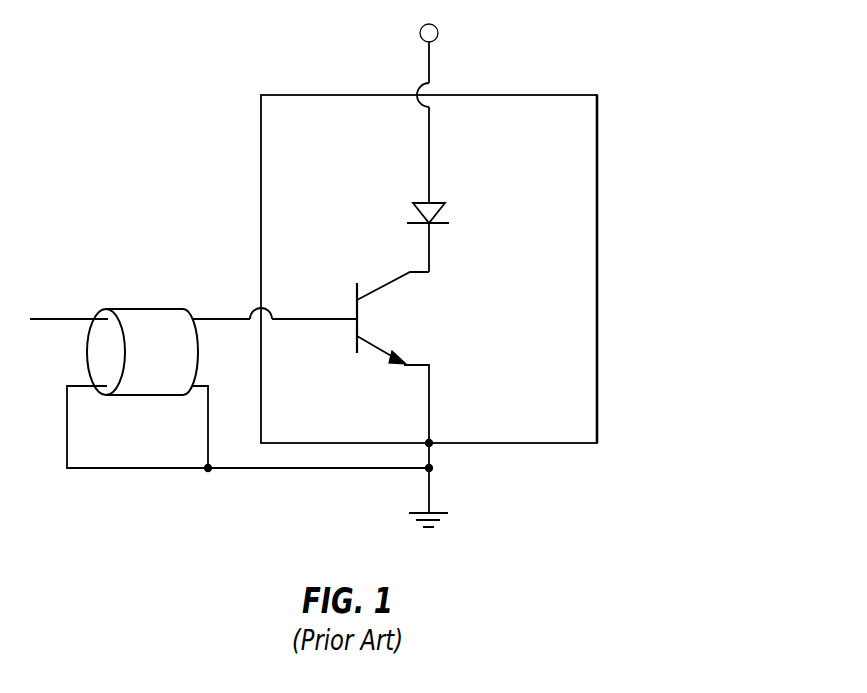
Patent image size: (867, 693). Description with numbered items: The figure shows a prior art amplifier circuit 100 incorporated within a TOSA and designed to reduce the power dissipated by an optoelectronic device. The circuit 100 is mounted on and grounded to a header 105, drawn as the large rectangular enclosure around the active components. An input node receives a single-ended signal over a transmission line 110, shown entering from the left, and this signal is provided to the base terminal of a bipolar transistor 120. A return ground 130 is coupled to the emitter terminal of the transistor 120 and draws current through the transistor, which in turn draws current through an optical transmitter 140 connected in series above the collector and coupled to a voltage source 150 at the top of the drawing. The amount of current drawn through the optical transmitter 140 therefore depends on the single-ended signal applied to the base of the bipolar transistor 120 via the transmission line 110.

The amplifier circuit 100 is at (667, 142).
The header 105 is at (598, 268).
The transmission line 110 is at (220, 318).
The bipolar transistor 120 is at (362, 310).
The return ground 130 is at (428, 529).
The optical transmitter 140 is at (432, 203).
The voltage source 150 is at (420, 32).